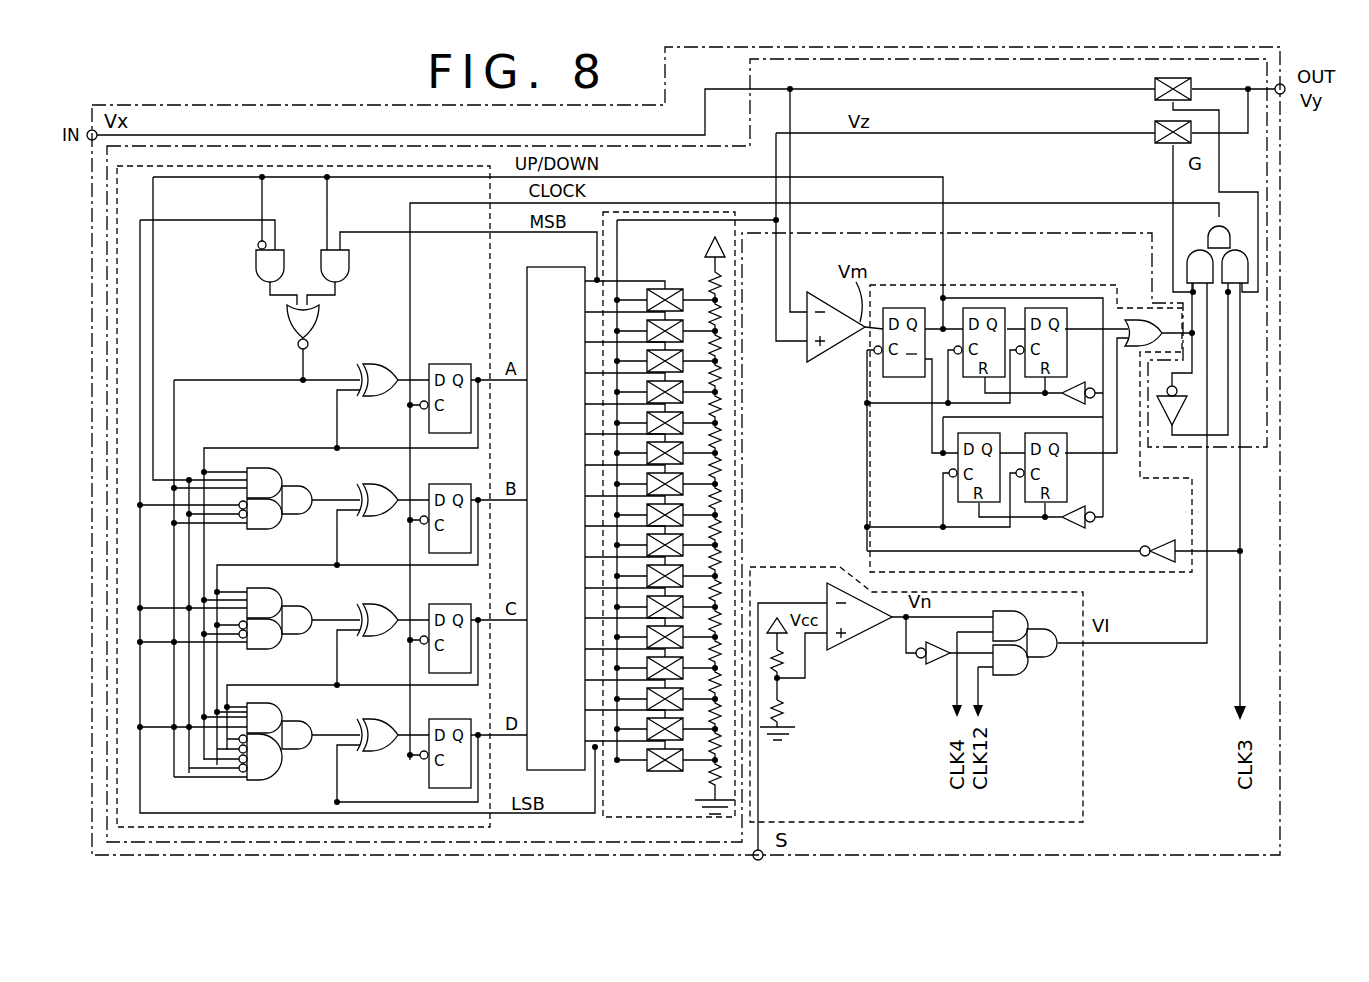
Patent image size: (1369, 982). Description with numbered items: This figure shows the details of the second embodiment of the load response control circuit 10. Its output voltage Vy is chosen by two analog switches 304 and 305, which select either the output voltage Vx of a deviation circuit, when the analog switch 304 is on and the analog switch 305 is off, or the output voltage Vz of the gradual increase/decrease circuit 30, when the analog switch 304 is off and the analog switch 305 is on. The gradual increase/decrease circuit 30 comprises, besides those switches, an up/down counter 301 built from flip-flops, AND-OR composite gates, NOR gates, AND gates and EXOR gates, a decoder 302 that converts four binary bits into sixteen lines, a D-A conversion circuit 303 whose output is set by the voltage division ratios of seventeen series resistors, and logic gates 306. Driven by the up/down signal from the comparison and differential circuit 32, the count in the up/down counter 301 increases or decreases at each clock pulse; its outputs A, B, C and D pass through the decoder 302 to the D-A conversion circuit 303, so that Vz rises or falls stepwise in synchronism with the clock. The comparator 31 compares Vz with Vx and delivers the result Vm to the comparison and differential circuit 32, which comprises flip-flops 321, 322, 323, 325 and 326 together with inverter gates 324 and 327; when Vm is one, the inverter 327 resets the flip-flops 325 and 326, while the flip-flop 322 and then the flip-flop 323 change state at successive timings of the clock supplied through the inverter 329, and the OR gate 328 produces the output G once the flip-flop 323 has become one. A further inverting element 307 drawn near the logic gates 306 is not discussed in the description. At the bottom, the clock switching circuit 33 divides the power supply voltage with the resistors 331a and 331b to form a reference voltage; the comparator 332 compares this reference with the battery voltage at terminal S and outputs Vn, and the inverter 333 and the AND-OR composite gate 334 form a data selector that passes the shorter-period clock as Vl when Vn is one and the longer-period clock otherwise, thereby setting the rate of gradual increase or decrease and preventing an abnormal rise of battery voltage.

The load response control circuit 10 is at (1282, 792).
The gradual increase/decrease circuit 30 is at (305, 142).
The up/down counter 301 is at (206, 163).
The decoder 302 is at (535, 267).
The D-A conversion circuit 303 is at (660, 528).
The analog switch 304 is at (1158, 98).
The analog switch 305 is at (1158, 140).
The logic gates 306 is at (1236, 236).
The inverter 307 is at (1162, 416).
The comparator 31 is at (836, 356).
The comparison and differential circuit 32 is at (850, 497).
The flip-flop 321 is at (905, 378).
The flip-flop 322 is at (984, 308).
The flip-flop 323 is at (1045, 308).
The inverter gate 324 is at (1078, 384).
The flip-flop 325 is at (949, 475).
The flip-flop 326 is at (1066, 455).
The inverter gate 327 is at (1072, 524).
The OR gate 328 is at (1138, 320).
The inverter 329 is at (1153, 549).
The clock switching circuit 33 is at (1085, 708).
The resistor 331a is at (783, 662).
The resistor 331b is at (790, 727).
The comparator 332 is at (858, 642).
The inverter 333 is at (938, 661).
The AND-OR composite gate 334 is at (1034, 674).